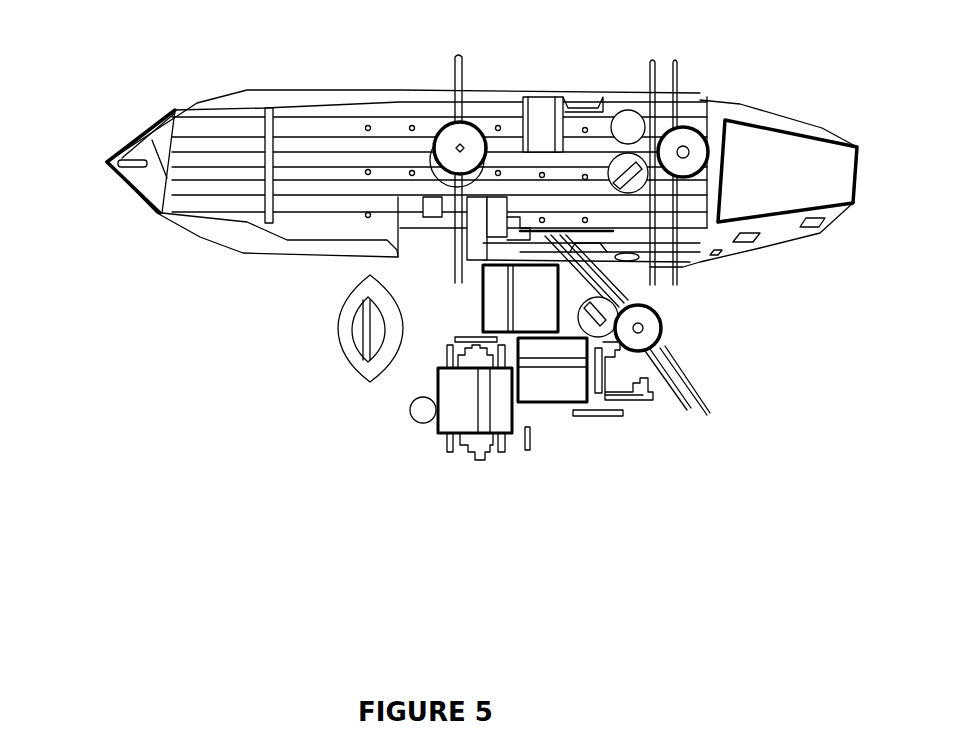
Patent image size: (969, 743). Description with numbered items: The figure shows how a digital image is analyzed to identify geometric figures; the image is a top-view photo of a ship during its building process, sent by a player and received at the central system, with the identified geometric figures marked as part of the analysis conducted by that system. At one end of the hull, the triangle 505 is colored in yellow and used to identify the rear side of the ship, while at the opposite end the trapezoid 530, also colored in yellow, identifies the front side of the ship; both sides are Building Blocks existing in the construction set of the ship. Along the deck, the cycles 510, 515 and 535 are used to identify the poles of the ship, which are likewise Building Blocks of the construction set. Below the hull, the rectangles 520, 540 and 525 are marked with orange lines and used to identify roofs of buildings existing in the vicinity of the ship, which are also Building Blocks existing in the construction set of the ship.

The triangle 505 is at (152, 122).
The cycle 510 is at (437, 122).
The cycle 515 is at (697, 102).
The rectangle 520 is at (433, 427).
The rectangle 525 is at (550, 403).
The trapezoid 530 is at (785, 217).
The cycle 535 is at (663, 320).
The rectangle 540 is at (483, 315).